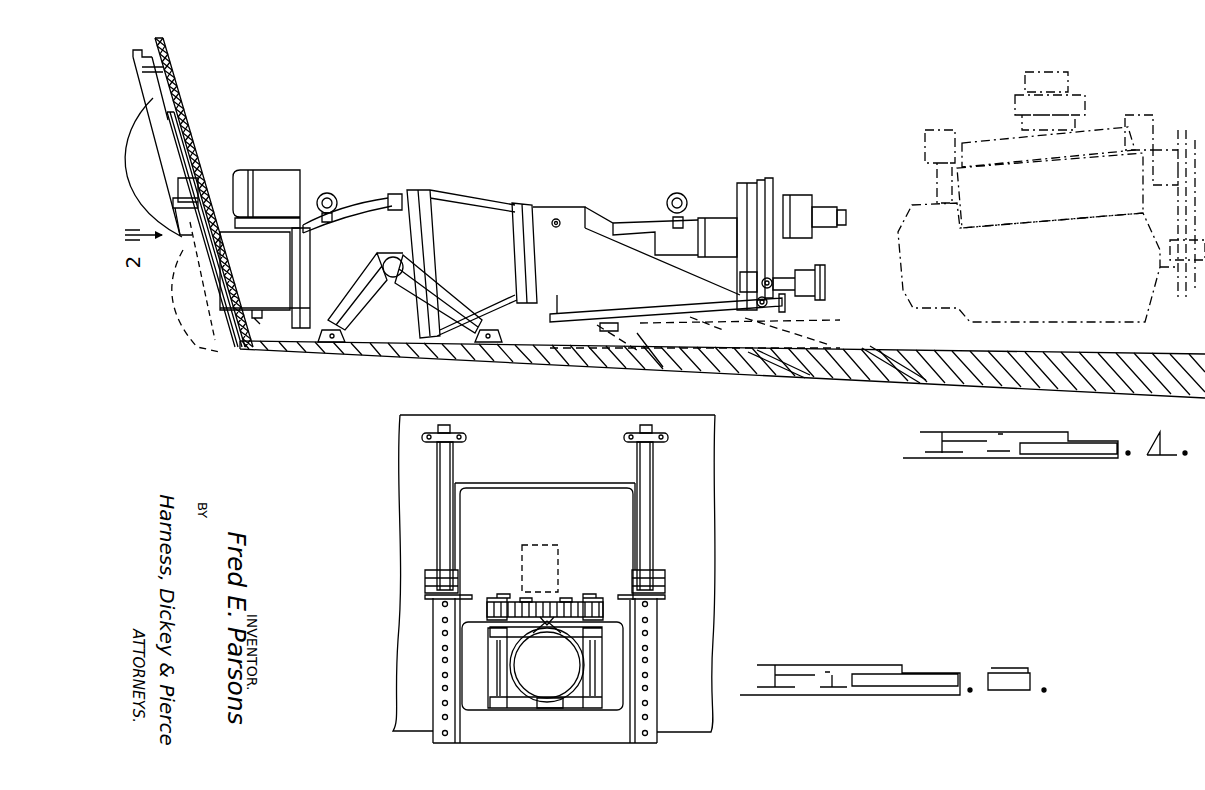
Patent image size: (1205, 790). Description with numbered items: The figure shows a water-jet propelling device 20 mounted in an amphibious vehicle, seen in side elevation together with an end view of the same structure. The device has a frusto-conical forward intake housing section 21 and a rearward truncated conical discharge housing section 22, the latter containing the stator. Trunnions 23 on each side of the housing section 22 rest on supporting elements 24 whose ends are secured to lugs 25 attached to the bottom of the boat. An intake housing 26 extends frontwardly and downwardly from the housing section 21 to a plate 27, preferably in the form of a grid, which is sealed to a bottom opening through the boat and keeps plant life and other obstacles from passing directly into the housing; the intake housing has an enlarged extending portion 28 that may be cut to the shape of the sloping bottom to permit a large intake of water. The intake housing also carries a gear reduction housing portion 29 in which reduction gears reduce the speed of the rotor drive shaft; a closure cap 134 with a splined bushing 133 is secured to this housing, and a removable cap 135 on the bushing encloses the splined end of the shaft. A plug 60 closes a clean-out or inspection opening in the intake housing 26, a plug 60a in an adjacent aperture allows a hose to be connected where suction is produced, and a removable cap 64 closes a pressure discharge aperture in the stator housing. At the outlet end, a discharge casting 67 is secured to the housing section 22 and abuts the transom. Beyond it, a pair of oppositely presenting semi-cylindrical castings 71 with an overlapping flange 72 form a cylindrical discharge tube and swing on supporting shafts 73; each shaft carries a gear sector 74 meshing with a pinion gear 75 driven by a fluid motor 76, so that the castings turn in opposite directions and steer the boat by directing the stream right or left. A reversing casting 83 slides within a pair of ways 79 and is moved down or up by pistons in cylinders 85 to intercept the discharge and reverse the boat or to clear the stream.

In FIG. 1, the propelling device 20 is at (452, 198).
In FIG. 1, the forward intake housing section 21 is at (478, 212).
In FIG. 1, the rearward discharge housing section 22 is at (353, 222).
In FIG. 1, the trunnions 23 is at (393, 277).
In FIG. 1, the supporting elements 24 is at (478, 300).
In FIG. 1, the lugs 25 is at (327, 342).
In FIG. 1, the intake housing 26 is at (590, 225).
In FIG. 1, the plate 27 is at (587, 310).
In FIG. 1, the extending portion 28 is at (876, 358).
In FIG. 1, the gear reduction housing portion 29 is at (750, 185).
In FIG. 1, the plug 60 is at (572, 202).
In FIG. 1, the plug 60a is at (555, 219).
In FIG. 1, the removable cap 64 is at (400, 195).
In FIG. 1, the discharge casting 67 is at (265, 278).
In FIG. 2, the semi-cylindrical castings 71 is at (578, 668).
In FIG. 2, the overlapping flange 72 is at (547, 632).
In FIG. 2, the supporting shafts 73 is at (592, 662).
In FIG. 2, the gear sector 74 is at (570, 615).
In FIG. 2, the pinion gear 75 is at (562, 598).
In FIG. 1, the fluid motor 76 is at (283, 175).
In FIG. 2, the fluid motor 76 is at (560, 572).
In FIG. 2, the ways 79 is at (437, 674).
In FIG. 2, the reversing casting 83 is at (640, 513).
In FIG. 1, the cylinders 85 is at (153, 100).
In FIG. 2, the cylinders 85 is at (450, 538).
In FIG. 1, the splined bushing 133 is at (818, 205).
In FIG. 1, the closure cap 134 is at (798, 192).
In FIG. 1, the removable cap 135 is at (840, 213).